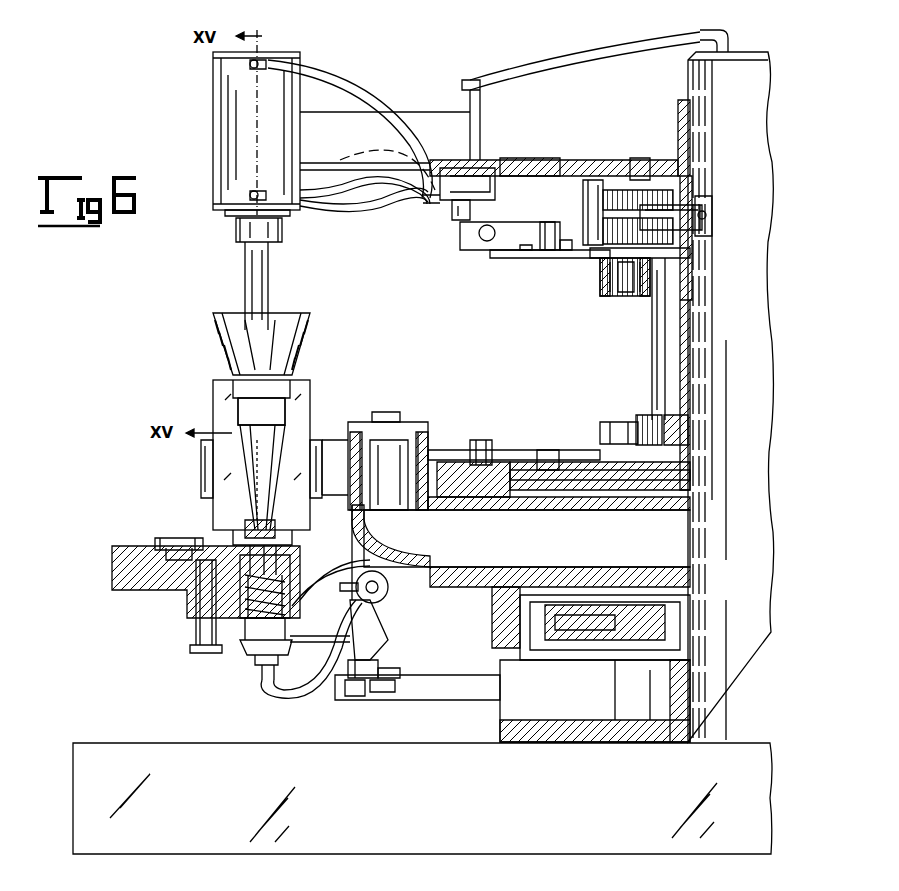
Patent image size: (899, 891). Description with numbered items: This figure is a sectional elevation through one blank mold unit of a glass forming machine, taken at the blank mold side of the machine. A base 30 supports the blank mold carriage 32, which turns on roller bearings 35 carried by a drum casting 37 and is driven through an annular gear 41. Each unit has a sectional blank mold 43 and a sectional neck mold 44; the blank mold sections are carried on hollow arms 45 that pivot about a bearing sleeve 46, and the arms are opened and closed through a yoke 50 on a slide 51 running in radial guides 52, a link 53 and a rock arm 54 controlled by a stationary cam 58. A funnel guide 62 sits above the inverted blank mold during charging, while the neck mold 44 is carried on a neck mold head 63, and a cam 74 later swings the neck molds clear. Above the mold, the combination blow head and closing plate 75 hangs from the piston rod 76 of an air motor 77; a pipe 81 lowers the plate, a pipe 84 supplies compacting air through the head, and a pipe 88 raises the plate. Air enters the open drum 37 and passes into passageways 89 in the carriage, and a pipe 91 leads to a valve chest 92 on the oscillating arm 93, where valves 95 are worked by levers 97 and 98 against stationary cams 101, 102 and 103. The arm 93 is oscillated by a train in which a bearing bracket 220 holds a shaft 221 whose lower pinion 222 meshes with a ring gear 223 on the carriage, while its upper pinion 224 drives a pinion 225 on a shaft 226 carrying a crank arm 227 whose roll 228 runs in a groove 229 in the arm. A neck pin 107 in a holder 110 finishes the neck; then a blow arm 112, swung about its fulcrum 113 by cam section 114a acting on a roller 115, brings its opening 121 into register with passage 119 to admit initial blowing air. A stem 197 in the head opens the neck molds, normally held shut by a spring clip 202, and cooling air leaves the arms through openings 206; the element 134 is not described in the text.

The base 30 is at (222, 747).
The blank mold carriage 32 is at (352, 520).
The roller bearings 35 is at (560, 640).
The drum casting 37 is at (612, 686).
The annular gear 41 is at (492, 600).
The blank mold 43 is at (222, 392).
The neck mold 44 is at (292, 540).
The arms 45 is at (340, 440).
The bearing sleeve 46 is at (420, 405).
The yoke 50 is at (440, 450).
The slide 51 is at (525, 510).
The guides 52 is at (597, 476).
The link 53 is at (490, 445).
The rock arm 54 is at (545, 450).
The stationary cam 58 is at (610, 422).
The funnel guide 62 is at (213, 322).
The neck mold head 63 is at (112, 565).
The cam 74 is at (358, 700).
The combination blow head and closing plate 75 is at (287, 402).
The piston rod 76 is at (263, 268).
The air motor 77 is at (213, 97).
The pipe 81 is at (355, 90).
The pipe 84 is at (385, 165).
The pipe 88 is at (360, 210).
The passageways 89 is at (527, 548).
The pipe 91 is at (712, 580).
The valve chest 92 is at (474, 185).
The oscillating arm 93 is at (552, 121).
The valves 95 is at (452, 216).
The lever 97 is at (508, 222).
The lever 98 is at (547, 222).
The stationary cam 101 is at (510, 256).
The stationary cam 102 is at (530, 258).
The stationary cam 103 is at (580, 270).
The neck pin 107 is at (292, 560).
The holder 110 is at (245, 648).
The blow arm 112 is at (380, 620).
The fulcrum 113 is at (386, 580).
The cam section 114a is at (380, 664).
The roller 115 is at (400, 670).
The passage 119 is at (370, 560).
The pipe 121 is at (262, 684).
The bearing 134 is at (628, 292).
The stem 197 is at (196, 632).
The spring clip 202 is at (155, 540).
The openings 206 is at (201, 475).
The bearing bracket 220 is at (700, 214).
The shaft 221 is at (652, 343).
The pinion 222 is at (636, 425).
The ring gear 223 is at (688, 452).
The pinion 224 is at (702, 236).
The pinion 225 is at (590, 256).
The shaft 226 is at (593, 175).
The crank arm 227 is at (583, 192).
The roll 228 is at (642, 158).
The groove 229 is at (590, 158).